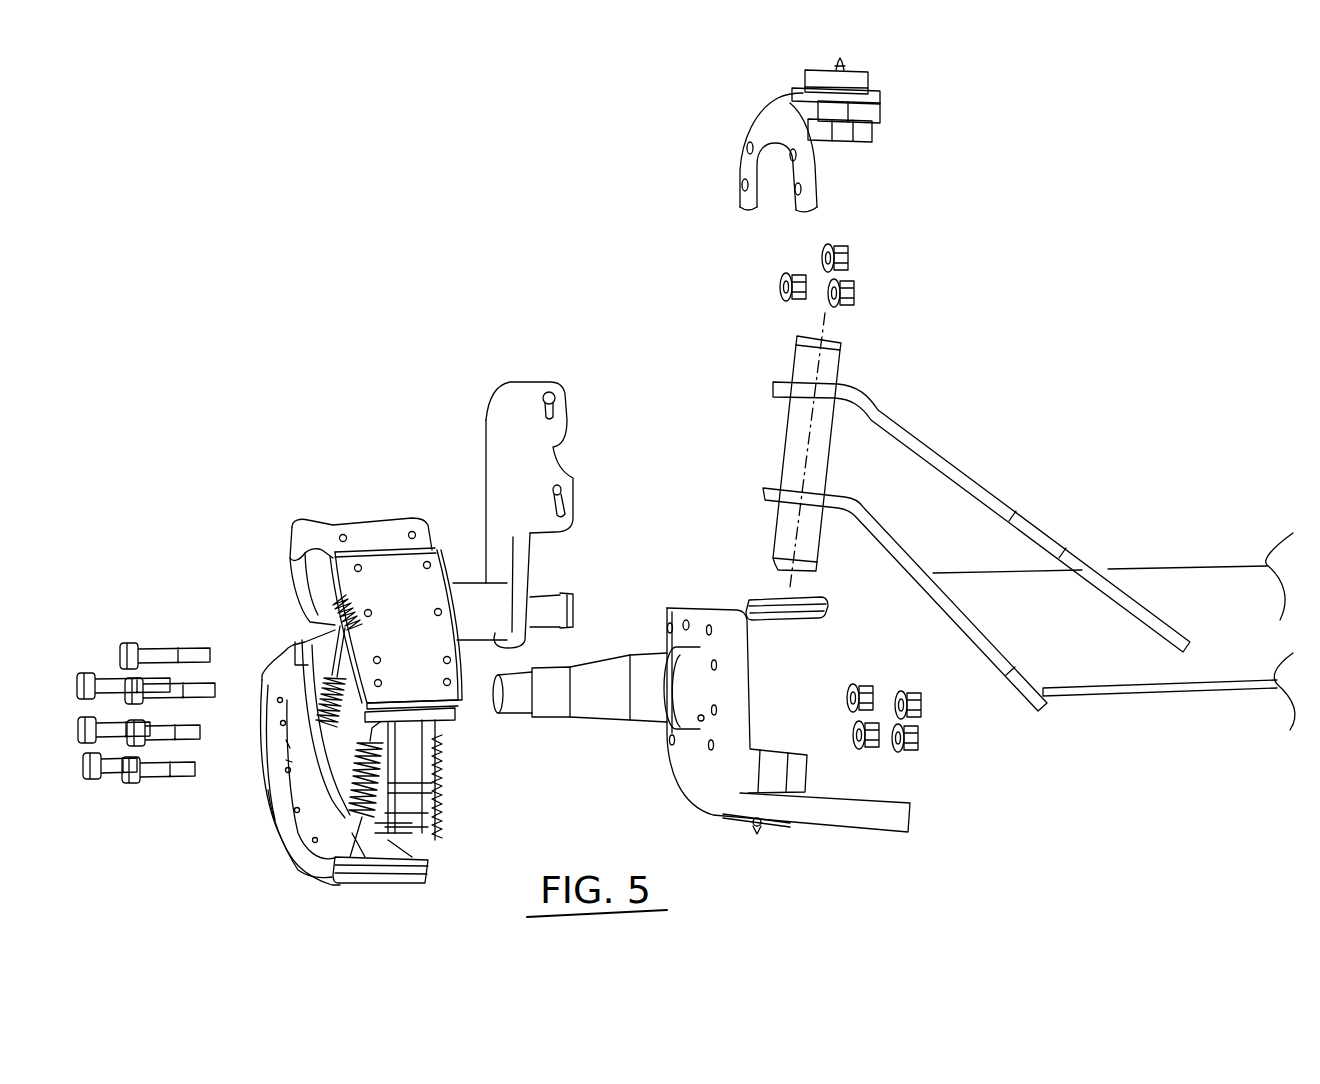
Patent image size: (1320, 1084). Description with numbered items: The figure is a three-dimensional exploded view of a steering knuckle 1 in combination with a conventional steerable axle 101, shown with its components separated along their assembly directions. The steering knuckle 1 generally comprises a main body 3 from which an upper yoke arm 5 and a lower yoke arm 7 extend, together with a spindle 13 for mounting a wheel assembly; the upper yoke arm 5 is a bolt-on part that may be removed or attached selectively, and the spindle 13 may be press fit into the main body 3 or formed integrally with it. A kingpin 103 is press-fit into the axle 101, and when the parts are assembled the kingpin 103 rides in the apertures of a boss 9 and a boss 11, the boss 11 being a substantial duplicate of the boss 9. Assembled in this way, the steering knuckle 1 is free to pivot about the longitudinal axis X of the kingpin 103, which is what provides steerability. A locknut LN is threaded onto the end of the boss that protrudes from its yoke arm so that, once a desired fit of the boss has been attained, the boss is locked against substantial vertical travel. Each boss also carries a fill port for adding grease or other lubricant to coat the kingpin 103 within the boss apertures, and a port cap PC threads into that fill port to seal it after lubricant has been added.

The steering knuckle 1 is at (720, 297).
The main body 3 is at (740, 692).
The upper yoke arm 5 is at (870, 112).
The lower yoke arm 7 is at (757, 797).
The boss 9 is at (853, 128).
The boss 11 is at (797, 775).
The spindle 13 is at (598, 702).
The steerable axle 101 is at (950, 517).
The kingpin 103 is at (817, 370).
The port cap PC is at (843, 65).
The locknut LN is at (877, 90).
The longitudinal axis X is at (823, 318).